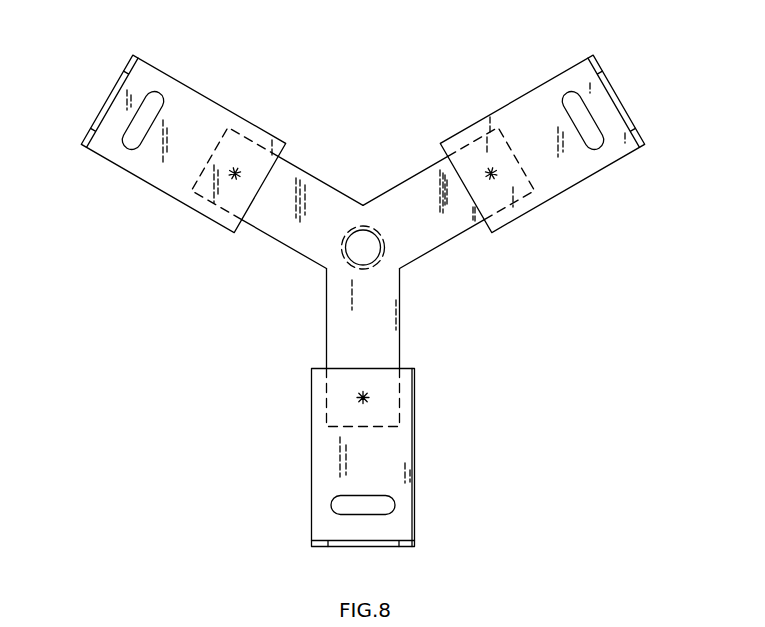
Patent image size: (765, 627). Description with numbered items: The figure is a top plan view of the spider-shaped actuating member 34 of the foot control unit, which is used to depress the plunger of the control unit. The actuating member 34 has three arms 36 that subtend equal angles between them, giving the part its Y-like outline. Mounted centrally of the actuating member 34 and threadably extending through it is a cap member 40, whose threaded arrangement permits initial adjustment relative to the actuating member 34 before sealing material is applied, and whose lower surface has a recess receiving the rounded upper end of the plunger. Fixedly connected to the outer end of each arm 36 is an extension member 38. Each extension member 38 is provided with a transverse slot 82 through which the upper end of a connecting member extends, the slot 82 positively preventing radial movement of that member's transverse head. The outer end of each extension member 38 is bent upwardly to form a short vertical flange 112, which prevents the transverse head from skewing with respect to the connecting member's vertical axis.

The actuating member 34 is at (315, 168).
The arms 36 is at (424, 178).
The extension members 38 is at (202, 108).
The cap member 40 is at (346, 262).
The transverse slots 82 is at (157, 98).
The vertical flange 112 is at (90, 132).